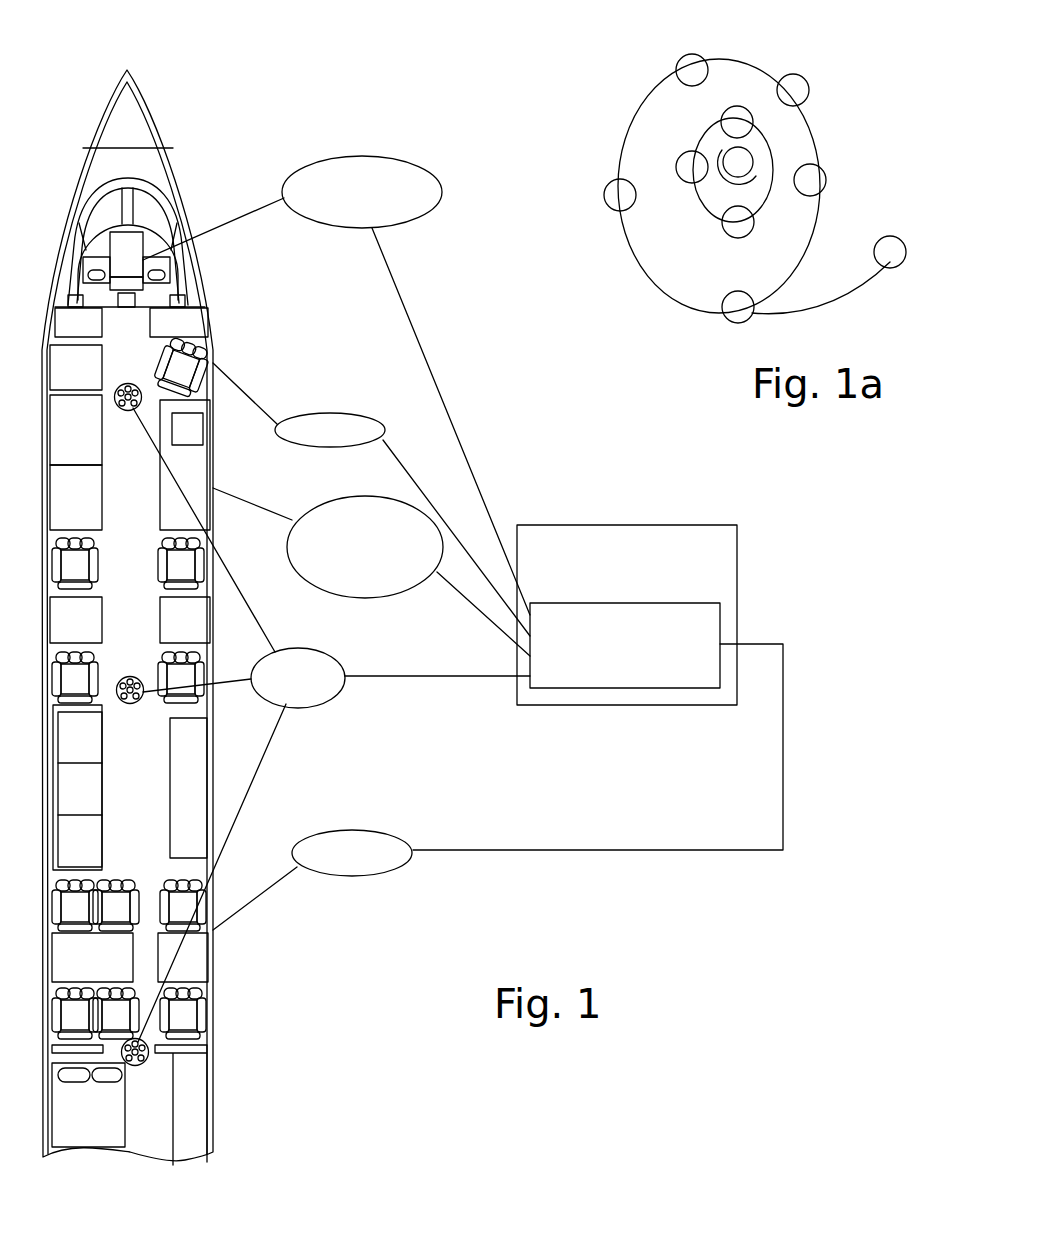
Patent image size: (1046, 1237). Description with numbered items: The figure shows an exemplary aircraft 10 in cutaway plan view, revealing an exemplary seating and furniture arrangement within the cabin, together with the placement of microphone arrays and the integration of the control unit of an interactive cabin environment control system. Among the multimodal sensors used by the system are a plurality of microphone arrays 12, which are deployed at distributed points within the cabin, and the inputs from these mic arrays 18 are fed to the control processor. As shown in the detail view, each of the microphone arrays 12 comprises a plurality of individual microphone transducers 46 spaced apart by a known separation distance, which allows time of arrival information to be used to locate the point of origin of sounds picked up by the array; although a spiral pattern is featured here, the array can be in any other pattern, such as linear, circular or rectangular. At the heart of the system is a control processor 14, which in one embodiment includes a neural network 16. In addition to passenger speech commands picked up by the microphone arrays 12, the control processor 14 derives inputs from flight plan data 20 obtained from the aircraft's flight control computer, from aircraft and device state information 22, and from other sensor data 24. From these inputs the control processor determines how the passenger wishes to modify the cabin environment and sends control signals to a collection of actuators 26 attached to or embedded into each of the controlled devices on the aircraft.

In FIG. 1, the aircraft 10 is at (60, 210).
In FIG. 1, the microphone array 12 is at (126, 410).
In FIG. 1A, the microphone array 12 is at (734, 179).
In FIG. 1, the control processor 14 is at (582, 530).
In FIG. 1, the neural network 16 is at (714, 638).
In FIG. 1, the mic arrays 18 is at (305, 706).
In FIG. 1, the flight plan data 20 is at (405, 220).
In FIG. 1, the aircraft and device state information 22 is at (343, 503).
In FIG. 1, the sensor data 24 is at (352, 413).
In FIG. 1, the actuators 26 is at (370, 878).
In FIG. 1A, the microphone transducer 46 is at (667, 72).